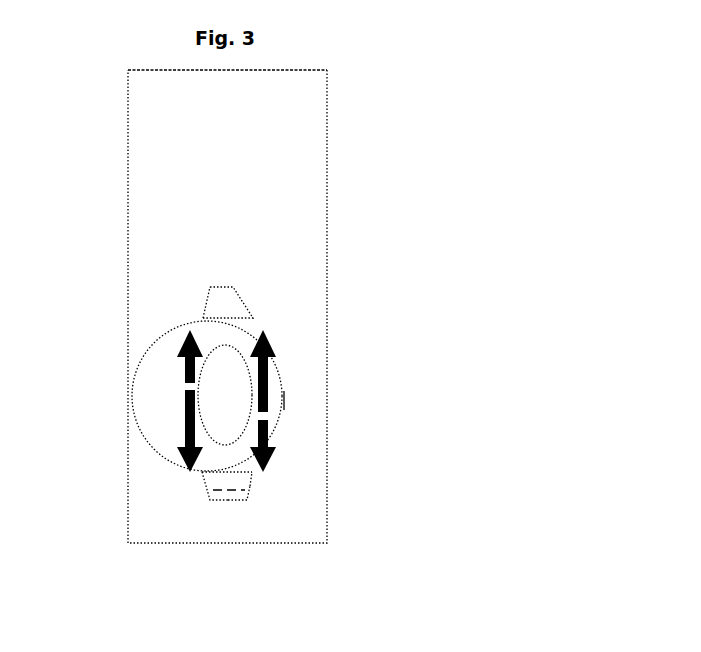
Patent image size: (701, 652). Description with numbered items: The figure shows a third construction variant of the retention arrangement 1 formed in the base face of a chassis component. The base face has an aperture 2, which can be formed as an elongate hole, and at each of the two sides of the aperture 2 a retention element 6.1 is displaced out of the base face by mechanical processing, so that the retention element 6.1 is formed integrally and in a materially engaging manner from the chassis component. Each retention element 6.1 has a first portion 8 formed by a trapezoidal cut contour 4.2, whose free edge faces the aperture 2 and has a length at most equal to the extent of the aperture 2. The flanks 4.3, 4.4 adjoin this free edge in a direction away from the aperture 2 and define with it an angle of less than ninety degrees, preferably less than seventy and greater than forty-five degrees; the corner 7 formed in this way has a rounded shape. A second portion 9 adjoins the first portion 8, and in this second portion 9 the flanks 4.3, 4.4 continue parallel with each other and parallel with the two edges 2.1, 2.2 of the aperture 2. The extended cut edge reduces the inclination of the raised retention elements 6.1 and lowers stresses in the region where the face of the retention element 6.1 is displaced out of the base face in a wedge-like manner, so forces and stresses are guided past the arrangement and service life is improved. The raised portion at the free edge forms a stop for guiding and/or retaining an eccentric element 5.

The device / housing 1 is at (390, 170).
The aperture 2 is at (218, 381).
The edge of the aperture 2.1 is at (198, 415).
The edge of the aperture 2.2 is at (268, 378).
The trapezoidal cut contour 4.2 is at (202, 303).
The flank 4.3 is at (203, 493).
The flank 4.4 is at (248, 493).
The eccentric element 5 is at (274, 411).
The retention element 6.1 is at (228, 430).
The corner 7 is at (262, 474).
The bearing surface 8 is at (238, 475).
The second portion 9 is at (228, 498).